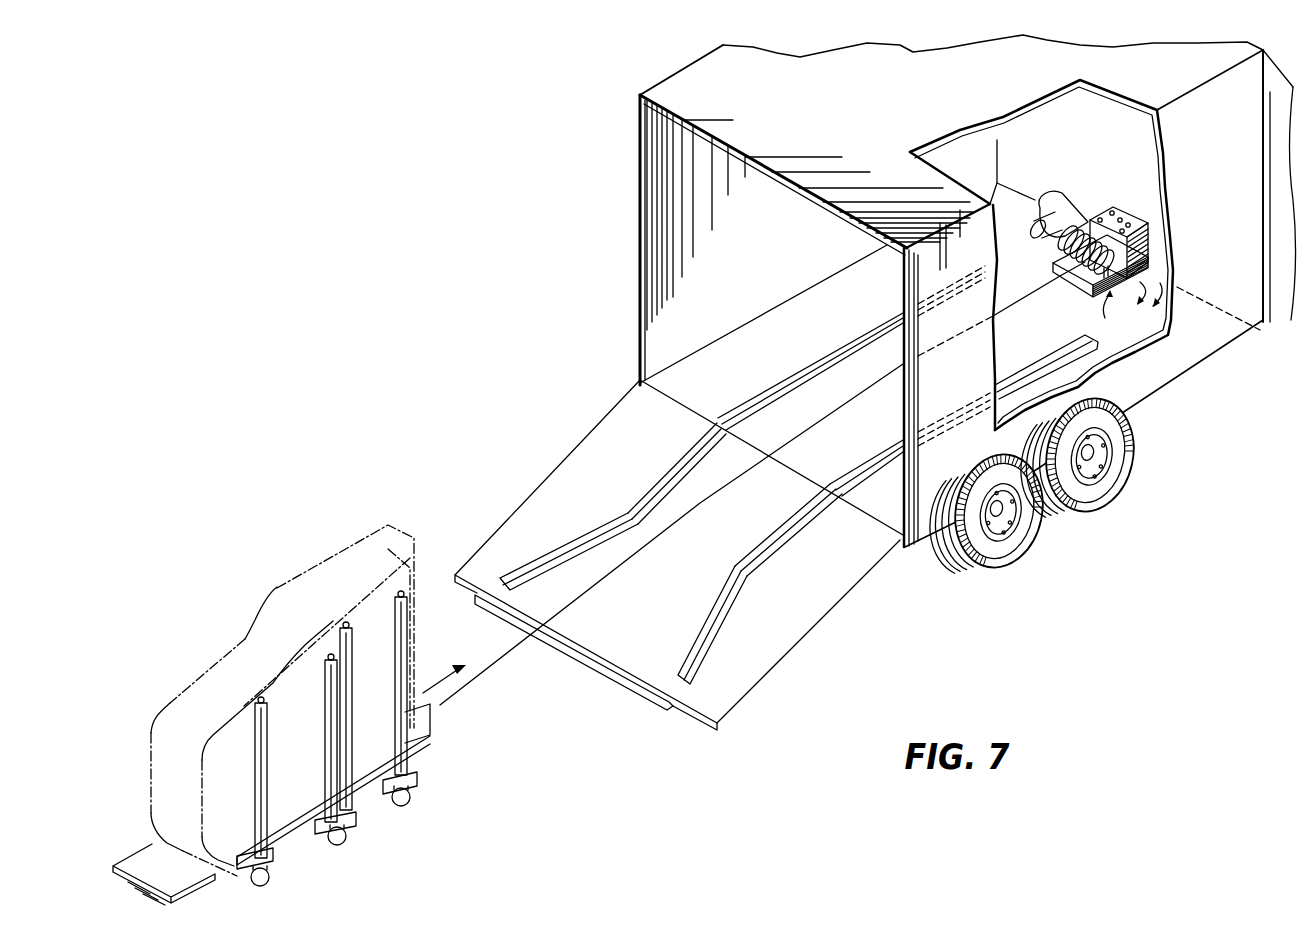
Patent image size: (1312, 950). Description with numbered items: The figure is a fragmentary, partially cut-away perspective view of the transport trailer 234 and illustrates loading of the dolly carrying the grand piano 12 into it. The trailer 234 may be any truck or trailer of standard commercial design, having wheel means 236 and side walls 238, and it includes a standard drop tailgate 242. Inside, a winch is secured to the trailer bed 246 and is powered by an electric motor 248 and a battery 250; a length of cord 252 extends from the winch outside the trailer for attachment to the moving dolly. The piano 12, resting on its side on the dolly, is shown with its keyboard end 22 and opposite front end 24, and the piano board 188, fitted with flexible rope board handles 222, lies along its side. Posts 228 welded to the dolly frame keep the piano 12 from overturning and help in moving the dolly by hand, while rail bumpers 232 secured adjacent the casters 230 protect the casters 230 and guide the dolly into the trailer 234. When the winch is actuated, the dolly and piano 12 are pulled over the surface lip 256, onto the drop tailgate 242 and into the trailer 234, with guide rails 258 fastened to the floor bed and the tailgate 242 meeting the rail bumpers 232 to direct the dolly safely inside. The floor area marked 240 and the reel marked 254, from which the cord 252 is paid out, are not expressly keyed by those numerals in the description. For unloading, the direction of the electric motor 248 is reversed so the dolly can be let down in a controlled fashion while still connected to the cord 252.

The grand piano 12 is at (276, 582).
The keyboard end 22 is at (399, 535).
The front end 24 is at (174, 783).
The piano board 188 is at (160, 865).
The board handles 222 is at (206, 885).
The posts 228 is at (344, 643).
The casters 230 is at (266, 888).
The rail bumpers 232 is at (281, 872).
The transport trailer 234 is at (616, 80).
The wheel means 236 is at (1010, 547).
The side walls 238 is at (663, 190).
The trailer floor 240 is at (720, 370).
The drop tailgate 242 is at (572, 487).
The trailer bed 246 is at (1108, 300).
The electric motor 248 is at (1042, 243).
The battery 250 is at (1137, 213).
The cord 252 is at (1050, 283).
The winch cable 254 is at (1153, 250).
The surface lip 256 is at (620, 676).
The guide rails 258 is at (773, 395).